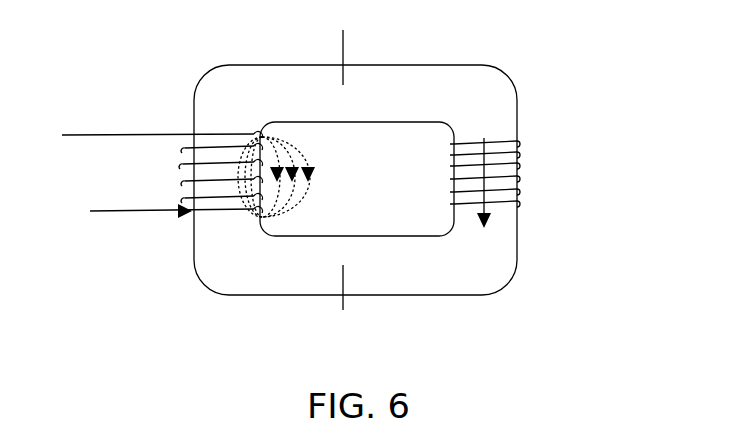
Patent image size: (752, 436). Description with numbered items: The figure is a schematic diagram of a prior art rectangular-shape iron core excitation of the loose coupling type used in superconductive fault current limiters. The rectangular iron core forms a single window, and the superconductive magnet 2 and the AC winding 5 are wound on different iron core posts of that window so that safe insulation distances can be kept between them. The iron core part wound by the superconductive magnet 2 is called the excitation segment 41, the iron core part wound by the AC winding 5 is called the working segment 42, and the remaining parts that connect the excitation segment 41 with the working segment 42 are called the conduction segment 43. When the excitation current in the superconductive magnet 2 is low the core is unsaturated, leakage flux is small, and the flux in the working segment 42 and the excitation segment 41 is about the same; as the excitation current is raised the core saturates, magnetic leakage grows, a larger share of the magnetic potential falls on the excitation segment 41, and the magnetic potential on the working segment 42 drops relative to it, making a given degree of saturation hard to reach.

The superconductive magnet 2 is at (185, 180).
The AC winding 5 is at (525, 180).
The excitation segment 41 is at (212, 115).
The working segment 42 is at (482, 108).
The conduction segment 43 is at (345, 177).